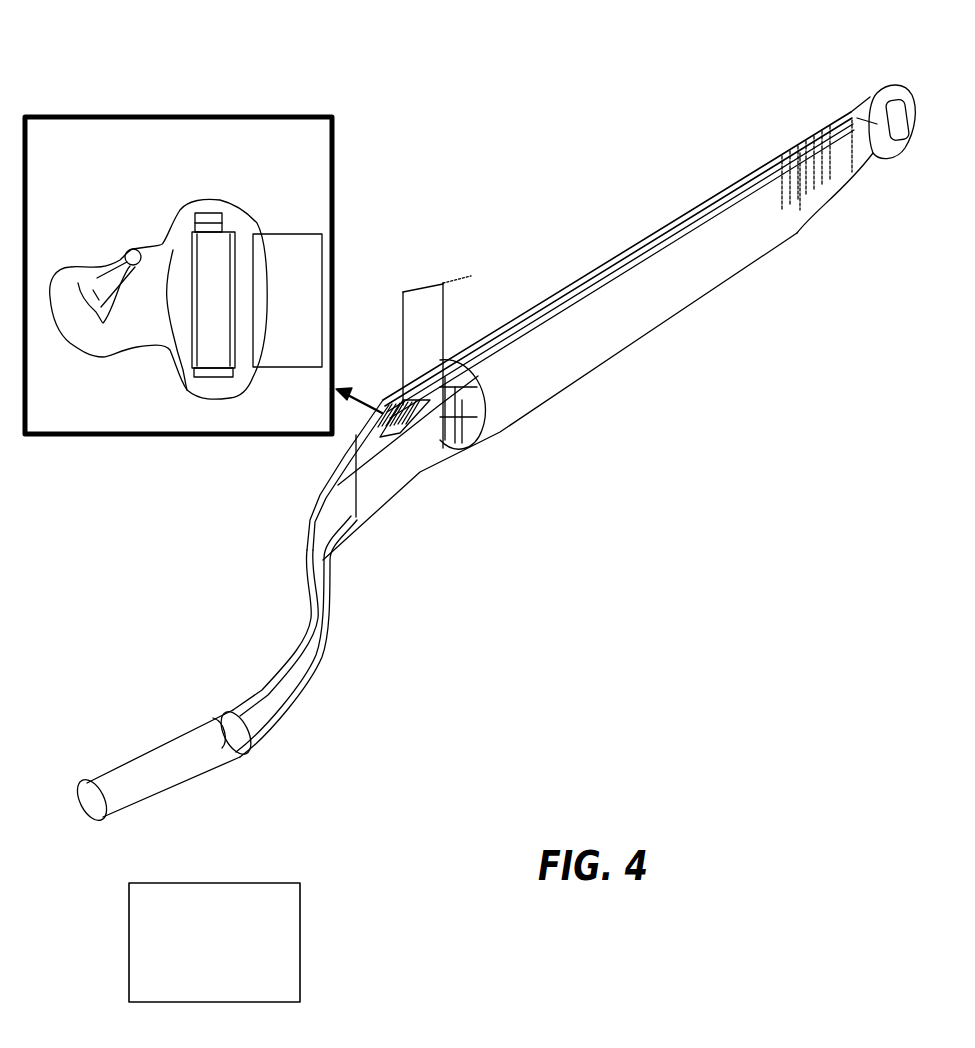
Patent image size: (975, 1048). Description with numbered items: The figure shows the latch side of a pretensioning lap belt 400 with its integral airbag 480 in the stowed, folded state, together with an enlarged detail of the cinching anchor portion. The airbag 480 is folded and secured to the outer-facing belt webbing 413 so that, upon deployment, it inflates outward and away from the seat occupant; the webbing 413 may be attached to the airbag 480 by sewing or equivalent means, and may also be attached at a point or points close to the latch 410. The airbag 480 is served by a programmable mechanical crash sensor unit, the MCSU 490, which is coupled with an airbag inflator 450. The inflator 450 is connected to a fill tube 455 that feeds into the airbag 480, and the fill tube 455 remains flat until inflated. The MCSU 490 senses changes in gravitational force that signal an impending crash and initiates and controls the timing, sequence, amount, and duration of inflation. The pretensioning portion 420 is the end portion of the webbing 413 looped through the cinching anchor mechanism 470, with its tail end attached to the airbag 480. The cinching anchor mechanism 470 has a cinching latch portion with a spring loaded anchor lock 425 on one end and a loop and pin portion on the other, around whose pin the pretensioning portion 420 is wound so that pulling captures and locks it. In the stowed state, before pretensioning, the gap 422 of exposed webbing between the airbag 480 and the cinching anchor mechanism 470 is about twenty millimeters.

The pretensioning lap belt 400 is at (456, 121).
The latch 410 is at (882, 92).
The belt webbing 413 is at (717, 183).
The pretensioning portion 420 is at (277, 240).
The gap 422 is at (422, 276).
The spring loaded anchor lock 425 is at (115, 250).
The airbag inflator 450 is at (158, 745).
The fill tube 455 is at (305, 542).
The cinching anchor mechanism 470 is at (159, 313).
The airbag 480 is at (641, 339).
The mechanical crash sensor unit (MCSU) 490 is at (115, 820).